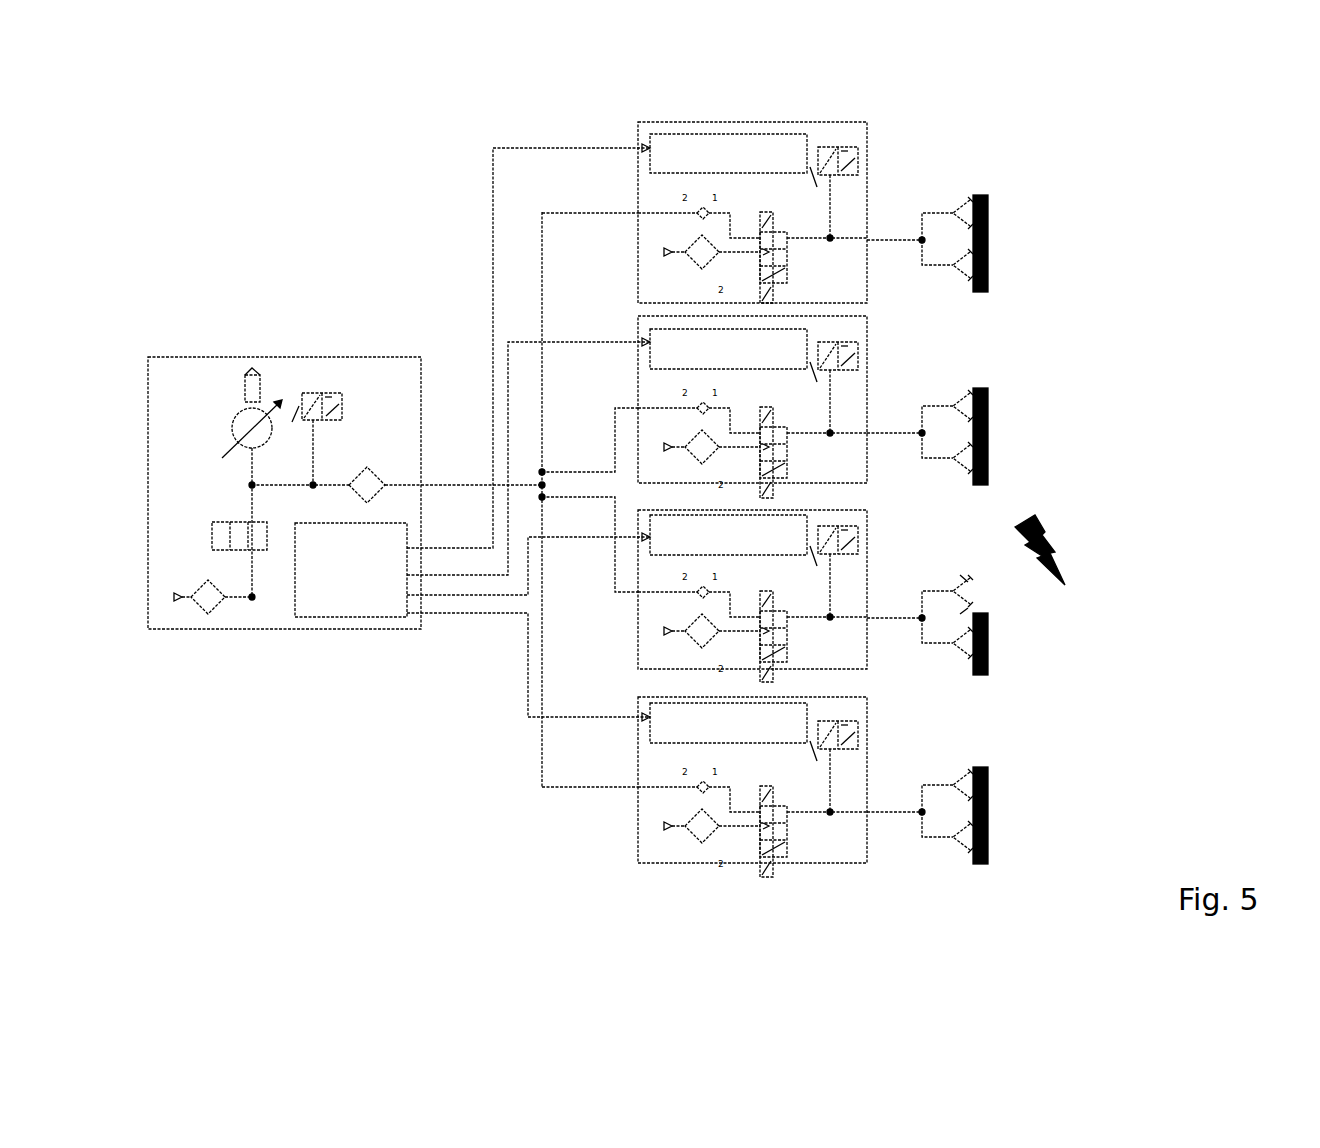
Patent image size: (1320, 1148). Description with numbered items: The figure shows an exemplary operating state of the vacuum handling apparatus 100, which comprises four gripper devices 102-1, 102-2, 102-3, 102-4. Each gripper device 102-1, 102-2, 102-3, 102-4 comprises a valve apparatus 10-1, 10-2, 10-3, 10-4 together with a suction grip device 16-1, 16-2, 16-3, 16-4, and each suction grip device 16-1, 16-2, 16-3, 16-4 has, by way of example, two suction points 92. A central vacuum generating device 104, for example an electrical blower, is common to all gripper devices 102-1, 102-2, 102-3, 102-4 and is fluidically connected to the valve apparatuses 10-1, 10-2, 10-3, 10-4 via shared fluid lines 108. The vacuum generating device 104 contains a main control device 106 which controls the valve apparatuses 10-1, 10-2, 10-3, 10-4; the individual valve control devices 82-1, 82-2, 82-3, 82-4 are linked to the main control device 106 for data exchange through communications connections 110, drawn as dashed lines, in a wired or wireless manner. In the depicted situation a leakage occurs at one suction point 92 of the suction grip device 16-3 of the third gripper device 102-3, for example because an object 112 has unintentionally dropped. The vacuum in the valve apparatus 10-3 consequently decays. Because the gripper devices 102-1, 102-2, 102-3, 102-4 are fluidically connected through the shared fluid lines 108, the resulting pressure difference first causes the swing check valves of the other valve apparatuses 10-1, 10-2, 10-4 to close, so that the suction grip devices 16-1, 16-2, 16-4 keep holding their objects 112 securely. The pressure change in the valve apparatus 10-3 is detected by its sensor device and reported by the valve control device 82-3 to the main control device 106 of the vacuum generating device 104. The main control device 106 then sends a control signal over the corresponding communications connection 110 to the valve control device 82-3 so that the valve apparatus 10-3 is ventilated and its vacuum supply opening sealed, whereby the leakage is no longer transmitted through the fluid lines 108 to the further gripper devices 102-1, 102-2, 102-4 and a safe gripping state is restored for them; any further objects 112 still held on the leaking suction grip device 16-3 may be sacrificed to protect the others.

The vacuum handling apparatus 100 is at (347, 160).
The vacuum generating device 104 is at (273, 338).
The main control device 106 is at (351, 570).
The fluid lines 108 is at (455, 486).
The communications connections 110 is at (525, 148).
The valve apparatus 10-1 is at (868, 124).
The valve apparatus 10-2 is at (868, 319).
The valve apparatus 10-3 is at (868, 508).
The valve apparatus 10-4 is at (868, 698).
The valve control device 82-1 is at (728, 153).
The valve control device 82-2 is at (728, 349).
The valve control device 82-3 is at (728, 535).
The valve control device 82-4 is at (728, 723).
The suction grip device 16-1 is at (940, 192).
The suction grip device 16-2 is at (940, 385).
The suction grip device 16-3 is at (940, 578).
The suction grip device 16-4 is at (940, 772).
The object 112 is at (990, 247).
The gripper device 102-1 is at (1072, 210).
The gripper device 102-2 is at (1072, 409).
The gripper device 102-3 is at (1072, 609).
The gripper device 102-4 is at (1072, 813).
The suction point 92 is at (977, 597).